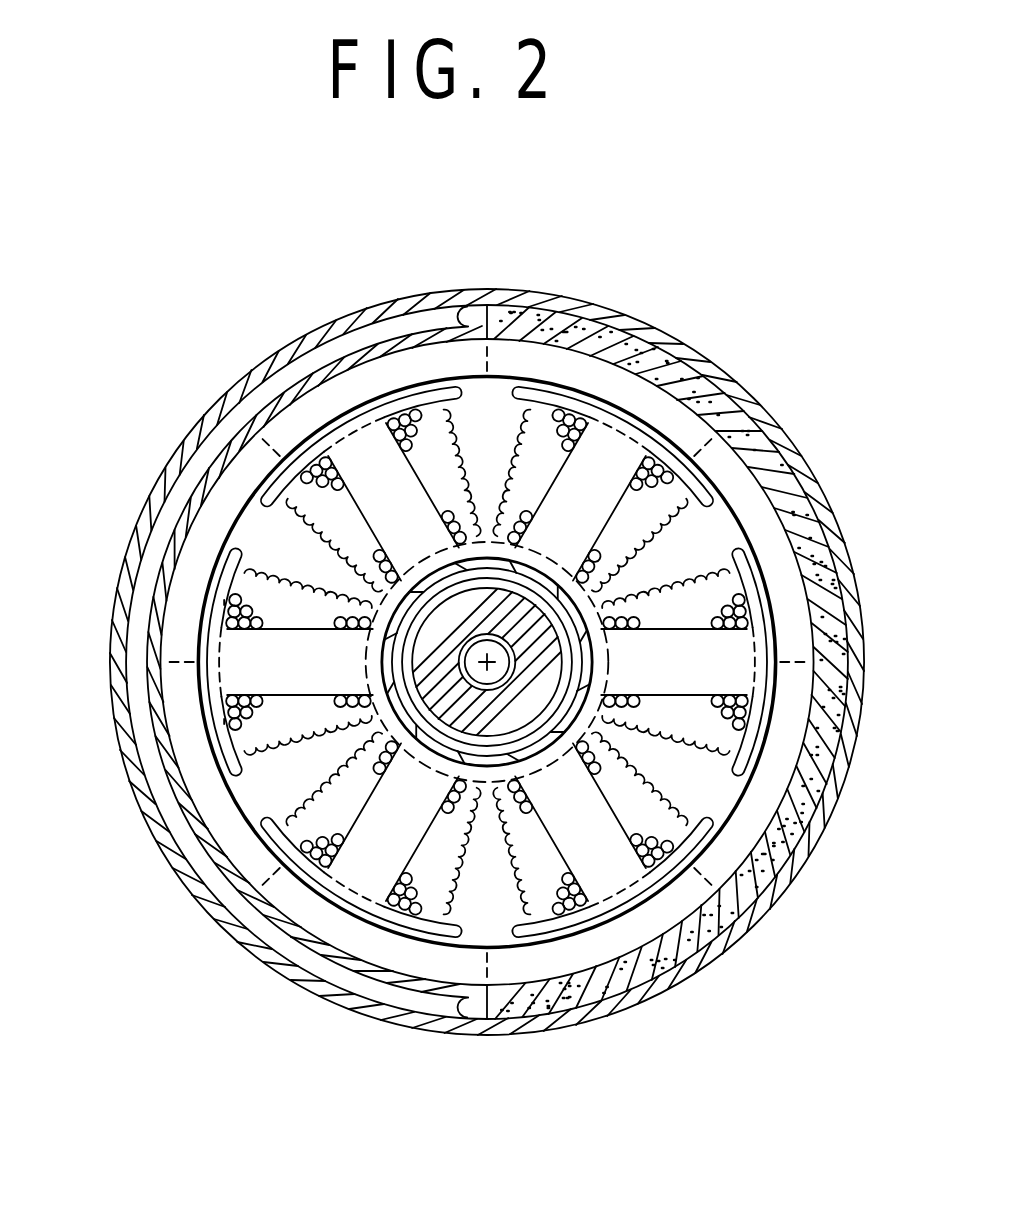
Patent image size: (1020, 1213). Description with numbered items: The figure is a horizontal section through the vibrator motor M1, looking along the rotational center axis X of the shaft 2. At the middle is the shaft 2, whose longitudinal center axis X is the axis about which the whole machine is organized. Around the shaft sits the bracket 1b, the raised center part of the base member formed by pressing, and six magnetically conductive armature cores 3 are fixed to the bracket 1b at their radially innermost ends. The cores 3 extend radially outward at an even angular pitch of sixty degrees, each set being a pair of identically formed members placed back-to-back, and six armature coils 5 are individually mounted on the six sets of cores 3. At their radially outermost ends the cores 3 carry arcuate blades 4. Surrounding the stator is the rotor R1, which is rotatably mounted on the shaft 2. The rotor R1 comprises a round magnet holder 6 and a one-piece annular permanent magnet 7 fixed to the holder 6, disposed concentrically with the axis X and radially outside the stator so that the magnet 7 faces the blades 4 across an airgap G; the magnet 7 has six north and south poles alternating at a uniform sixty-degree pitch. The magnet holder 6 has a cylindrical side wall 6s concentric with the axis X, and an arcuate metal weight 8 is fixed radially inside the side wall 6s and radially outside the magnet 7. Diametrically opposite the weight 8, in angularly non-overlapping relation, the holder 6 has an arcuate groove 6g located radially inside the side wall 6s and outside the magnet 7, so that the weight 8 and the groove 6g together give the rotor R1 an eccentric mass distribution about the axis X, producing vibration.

The vibrator motor M1 is at (672, 253).
The rotor R1 is at (714, 346).
The magnet holder 6 is at (450, 617).
The cylindrical side wall 6s is at (790, 447).
The arcuate groove 6g is at (192, 473).
The annular permanent magnet 7 is at (783, 565).
The arcuate metal weight 8 is at (823, 768).
The center axis X is at (505, 660).
The armature coil 5 is at (645, 805).
The shaft 2 is at (500, 678).
The bracket 1b is at (447, 747).
The armature core 3 is at (238, 670).
The arcuate blade 4 is at (217, 608).
The airgap G is at (212, 730).